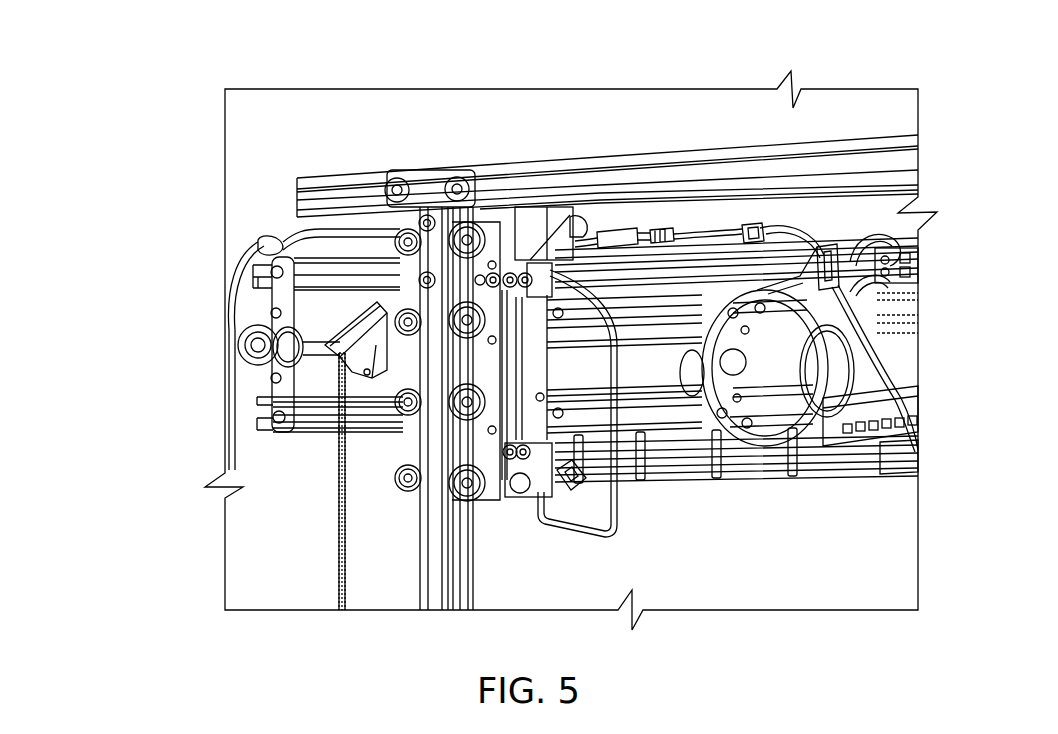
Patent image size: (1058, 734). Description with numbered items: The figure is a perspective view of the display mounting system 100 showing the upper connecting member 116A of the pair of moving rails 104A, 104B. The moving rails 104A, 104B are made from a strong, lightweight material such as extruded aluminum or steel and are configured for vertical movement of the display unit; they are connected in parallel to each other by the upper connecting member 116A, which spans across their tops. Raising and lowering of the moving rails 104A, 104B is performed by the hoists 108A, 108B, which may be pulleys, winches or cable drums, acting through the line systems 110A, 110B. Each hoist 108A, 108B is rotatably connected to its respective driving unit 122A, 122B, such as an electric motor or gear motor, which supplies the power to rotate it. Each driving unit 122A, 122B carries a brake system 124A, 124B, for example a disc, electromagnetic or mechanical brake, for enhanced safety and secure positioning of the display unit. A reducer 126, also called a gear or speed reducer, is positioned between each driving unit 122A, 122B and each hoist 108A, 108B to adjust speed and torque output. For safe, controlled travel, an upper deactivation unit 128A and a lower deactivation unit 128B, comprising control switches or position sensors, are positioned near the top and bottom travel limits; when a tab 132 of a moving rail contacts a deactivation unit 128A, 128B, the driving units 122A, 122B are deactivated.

The display mounting system 100 is at (289, 44).
The upper connecting member 116A is at (330, 177).
The moving rail 104A is at (276, 408).
The moving rail 104B is at (425, 578).
The hoist 108A is at (230, 349).
The hoist 108B is at (273, 399).
The line system 110A is at (198, 481).
The line system 110B is at (337, 522).
The upper deactivation unit 128A is at (537, 258).
The tab 132 is at (548, 255).
The driving unit 122A is at (727, 289).
The driving unit 122B is at (640, 368).
The brake system 124A is at (828, 257).
The brake system 124B is at (783, 360).
The lower deactivation unit 128B is at (534, 497).
The reducer 126 is at (568, 480).